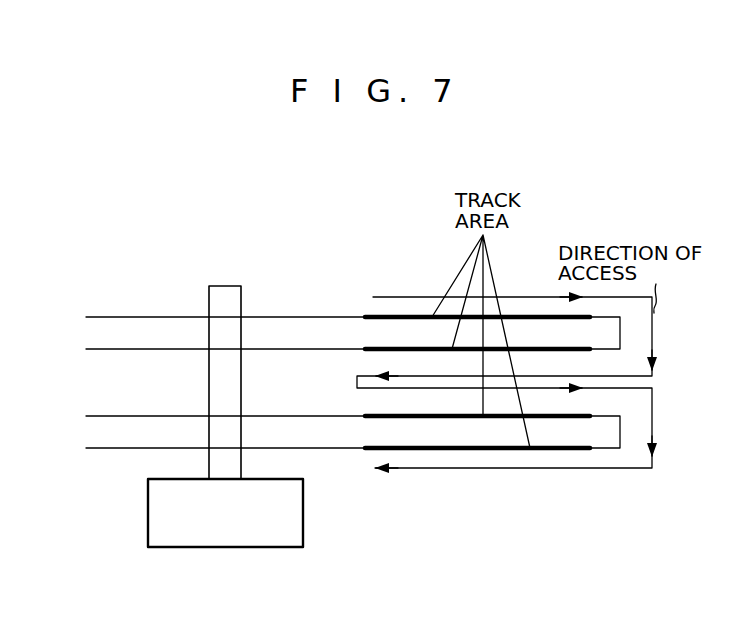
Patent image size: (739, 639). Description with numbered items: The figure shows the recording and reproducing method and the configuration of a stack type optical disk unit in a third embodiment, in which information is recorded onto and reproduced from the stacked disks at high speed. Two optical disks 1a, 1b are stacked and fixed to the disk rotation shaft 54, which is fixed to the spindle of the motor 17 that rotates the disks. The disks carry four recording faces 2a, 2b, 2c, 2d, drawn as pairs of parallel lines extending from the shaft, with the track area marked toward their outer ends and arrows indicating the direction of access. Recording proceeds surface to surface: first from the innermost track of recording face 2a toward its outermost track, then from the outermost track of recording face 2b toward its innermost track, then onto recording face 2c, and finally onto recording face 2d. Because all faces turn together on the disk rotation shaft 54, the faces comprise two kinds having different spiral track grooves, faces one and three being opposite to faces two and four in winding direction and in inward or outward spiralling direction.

The optical disk 1a is at (316, 328).
The optical disk 1b is at (327, 440).
The recording face #1 2a is at (118, 317).
The recording face #2 2b is at (142, 349).
The recording face #3 2c is at (102, 416).
The recording face #4 2d is at (118, 448).
The disk rotation shaft 54 is at (229, 347).
The motor 17 is at (225, 548).